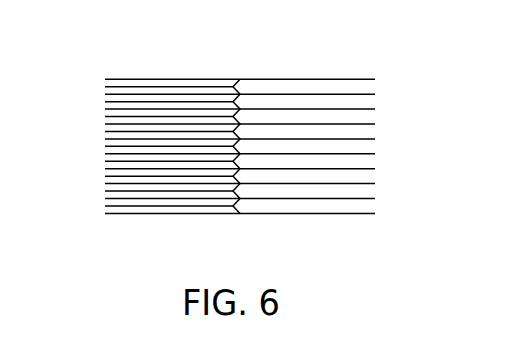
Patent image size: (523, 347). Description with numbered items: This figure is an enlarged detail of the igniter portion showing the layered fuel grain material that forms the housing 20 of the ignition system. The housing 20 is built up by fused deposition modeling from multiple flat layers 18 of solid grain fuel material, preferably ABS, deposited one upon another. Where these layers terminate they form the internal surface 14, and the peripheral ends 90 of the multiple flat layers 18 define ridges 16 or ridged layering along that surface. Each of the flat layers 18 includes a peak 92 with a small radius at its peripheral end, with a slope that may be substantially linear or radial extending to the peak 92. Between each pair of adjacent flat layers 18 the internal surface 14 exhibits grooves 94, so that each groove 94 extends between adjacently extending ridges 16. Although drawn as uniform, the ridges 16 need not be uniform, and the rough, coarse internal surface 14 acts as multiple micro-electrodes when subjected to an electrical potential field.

The internal surface 14 is at (130, 171).
The ridges 16 is at (233, 206).
The multiple flat layers 18 is at (368, 101).
The housing 20 is at (260, 78).
The peripheral ends 90 is at (157, 79).
The peak 92 is at (233, 162).
The grooves 94 is at (136, 206).